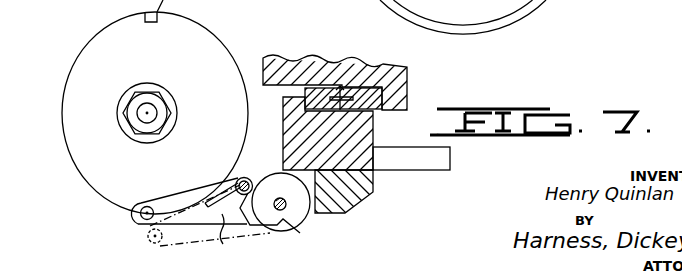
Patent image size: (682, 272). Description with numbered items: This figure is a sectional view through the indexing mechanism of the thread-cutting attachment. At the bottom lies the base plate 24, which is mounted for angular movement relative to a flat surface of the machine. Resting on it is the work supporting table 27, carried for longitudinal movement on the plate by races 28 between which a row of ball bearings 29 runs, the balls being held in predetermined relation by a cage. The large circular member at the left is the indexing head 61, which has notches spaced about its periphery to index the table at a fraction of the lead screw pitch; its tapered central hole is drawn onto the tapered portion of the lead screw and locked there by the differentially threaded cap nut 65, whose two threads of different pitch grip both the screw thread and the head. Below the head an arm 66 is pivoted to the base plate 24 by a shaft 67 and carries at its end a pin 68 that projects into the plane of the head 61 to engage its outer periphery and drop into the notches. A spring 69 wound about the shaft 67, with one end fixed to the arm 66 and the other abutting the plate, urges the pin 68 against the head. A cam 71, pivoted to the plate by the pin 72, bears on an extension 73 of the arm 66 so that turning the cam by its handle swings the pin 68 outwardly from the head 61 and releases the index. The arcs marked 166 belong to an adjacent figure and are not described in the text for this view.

The base plate 24 is at (365, 163).
The work supporting table 27 is at (381, 77).
The races 28 is at (377, 98).
The ball bearings 29 is at (350, 106).
The indexing head 61 is at (155, 107).
The differentially threaded cap nut 65 is at (168, 118).
The arm 66 is at (204, 241).
The shaft 67 is at (237, 182).
The pin 68 is at (139, 216).
The spring 69 is at (250, 178).
The cam 71 is at (294, 228).
The pin 72 is at (287, 207).
The extension 73 is at (279, 166).
The ring 166 is at (463, 17).